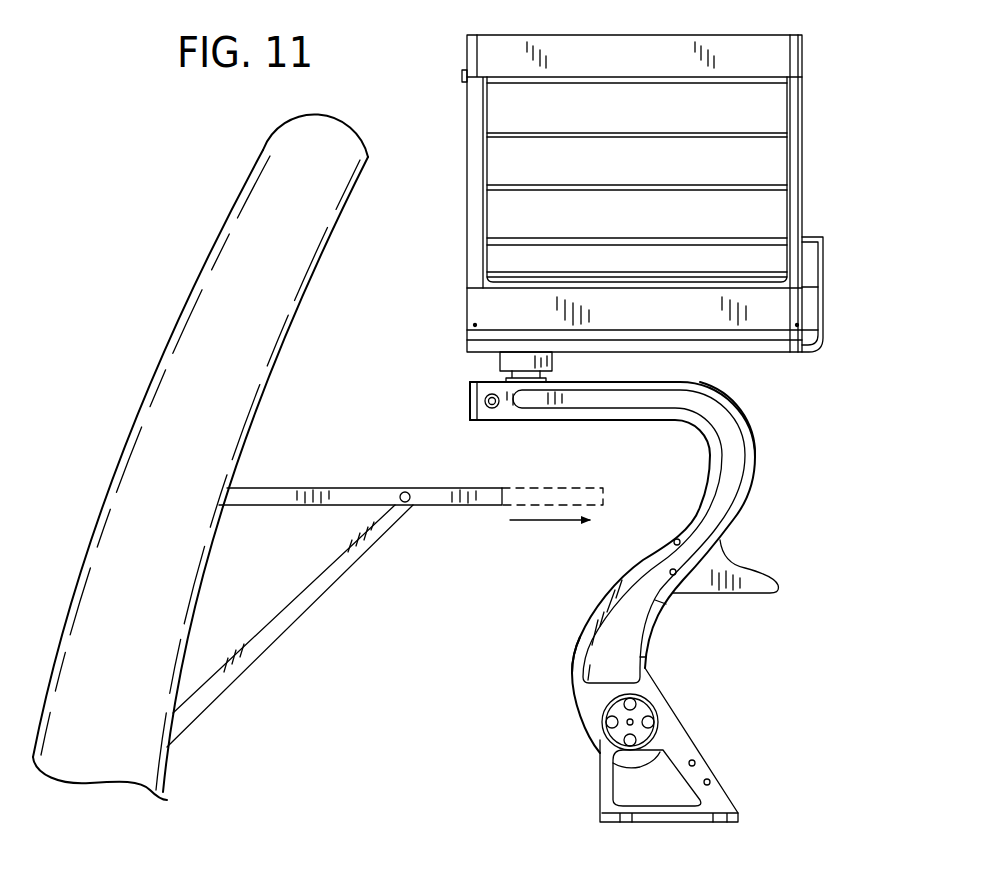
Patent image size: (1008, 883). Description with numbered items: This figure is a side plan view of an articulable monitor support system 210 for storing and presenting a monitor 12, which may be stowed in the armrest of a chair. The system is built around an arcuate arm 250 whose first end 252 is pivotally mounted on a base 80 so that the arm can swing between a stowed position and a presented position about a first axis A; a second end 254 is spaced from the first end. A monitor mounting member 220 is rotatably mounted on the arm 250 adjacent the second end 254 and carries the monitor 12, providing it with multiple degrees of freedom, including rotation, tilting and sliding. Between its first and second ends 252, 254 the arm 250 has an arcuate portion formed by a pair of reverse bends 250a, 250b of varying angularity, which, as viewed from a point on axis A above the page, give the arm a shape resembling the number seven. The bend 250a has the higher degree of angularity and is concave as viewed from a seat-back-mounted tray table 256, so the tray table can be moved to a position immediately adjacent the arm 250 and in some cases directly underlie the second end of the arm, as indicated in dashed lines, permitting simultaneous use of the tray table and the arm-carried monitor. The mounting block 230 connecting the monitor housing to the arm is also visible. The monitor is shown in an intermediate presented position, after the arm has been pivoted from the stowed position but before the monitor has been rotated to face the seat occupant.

The monitor 12 is at (777, 148).
The articulable monitor support system 210 is at (822, 202).
The monitor mounting member 220 is at (824, 302).
The mounting block 230 is at (500, 371).
The arcuate arm 250 is at (622, 567).
The reverse bend 250a is at (756, 434).
The reverse bend 250b is at (570, 632).
The first end 252 is at (668, 700).
The second end 254 is at (484, 401).
The tray table 256 is at (243, 479).
The base 80 is at (708, 805).
The first axis A is at (607, 737).